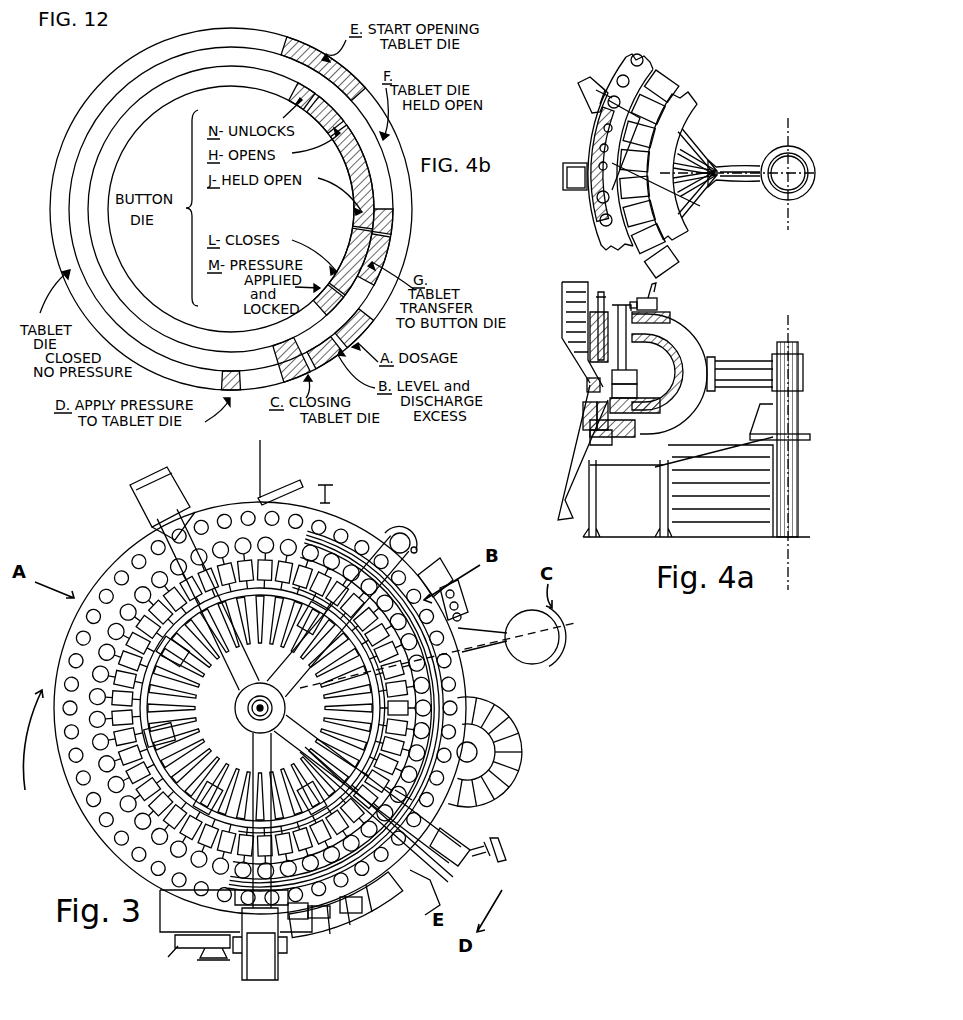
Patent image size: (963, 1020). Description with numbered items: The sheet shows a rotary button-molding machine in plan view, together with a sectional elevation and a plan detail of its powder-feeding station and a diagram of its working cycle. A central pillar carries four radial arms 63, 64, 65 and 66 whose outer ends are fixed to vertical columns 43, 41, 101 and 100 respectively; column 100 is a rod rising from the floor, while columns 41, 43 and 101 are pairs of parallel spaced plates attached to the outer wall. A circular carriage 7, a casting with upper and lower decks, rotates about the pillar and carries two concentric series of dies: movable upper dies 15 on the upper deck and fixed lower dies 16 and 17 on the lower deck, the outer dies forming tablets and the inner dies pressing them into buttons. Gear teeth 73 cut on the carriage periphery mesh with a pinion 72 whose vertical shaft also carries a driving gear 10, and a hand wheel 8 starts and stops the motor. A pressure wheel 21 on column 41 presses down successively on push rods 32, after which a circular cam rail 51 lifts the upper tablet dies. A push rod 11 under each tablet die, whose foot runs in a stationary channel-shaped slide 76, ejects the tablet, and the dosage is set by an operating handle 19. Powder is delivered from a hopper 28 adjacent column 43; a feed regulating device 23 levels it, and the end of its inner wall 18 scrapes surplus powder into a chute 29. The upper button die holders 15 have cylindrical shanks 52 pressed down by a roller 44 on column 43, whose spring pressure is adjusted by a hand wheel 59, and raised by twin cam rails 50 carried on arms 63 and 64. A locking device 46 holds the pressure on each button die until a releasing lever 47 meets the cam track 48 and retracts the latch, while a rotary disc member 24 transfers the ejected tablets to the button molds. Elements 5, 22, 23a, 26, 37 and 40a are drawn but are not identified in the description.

In FIG. 3, the machine 5 is at (414, 545).
In FIG. 4A, the carriage 7 is at (626, 440).
In FIG. 3, the hand wheel 8 is at (293, 480).
In FIG. 3, the driving gear 10 is at (360, 900).
In FIG. 4A, the push rod 11 is at (584, 410).
In FIG. 4A, the upper button-forming die holder 15 is at (630, 378).
In FIG. 4B, the lower die 16 is at (605, 212).
In FIG. 4A, the lower die 16 is at (634, 394).
In FIG. 4B, the lower die 17 is at (600, 192).
In FIG. 4B, the inner wall 18 is at (603, 90).
In FIG. 3, the operating handle 19 is at (318, 916).
In FIG. 3, the pressure wheel 21 is at (305, 912).
In FIG. 3, the lever 22 is at (200, 962).
In FIG. 4B, the powder feed regulating device 23 is at (598, 128).
In FIG. 4A, the powder feed regulating device 23 is at (586, 382).
In FIG. 4B, the die arm 23a is at (695, 205).
In FIG. 3, the rotary disc member 24 is at (518, 775).
In FIG. 3, the support 26 is at (438, 570).
In FIG. 4B, the hopper 28 is at (570, 174).
In FIG. 4A, the hopper 28 is at (575, 318).
In FIG. 3, the hopper 28 is at (410, 878).
In FIG. 4B, the chute 29 is at (585, 95).
In FIG. 4A, the chute 29 is at (600, 478).
In FIG. 3, the chute 29 is at (348, 912).
In FIG. 4A, the push rod 32 is at (604, 295).
In FIG. 3, the valve 37 is at (325, 483).
In FIG. 3, the plate 40a is at (462, 594).
In FIG. 3, the column 41 is at (280, 962).
In FIG. 3, the column 43 is at (433, 845).
In FIG. 3, the pressure roller 44 is at (400, 795).
In FIG. 4A, the die locking device 46 is at (660, 298).
In FIG. 3, the die locking device 46 is at (140, 706).
In FIG. 4A, the releasing lever 47 is at (655, 288).
In FIG. 3, the releasing cam-track 48 is at (320, 608).
In FIG. 3, the cam rails 50 is at (372, 545).
In FIG. 3, the cam rail 51 is at (340, 540).
In FIG. 4A, the shank 52 is at (634, 330).
In FIG. 3, the hand wheel 59 is at (512, 848).
In FIG. 3, the radial arm 63 is at (330, 760).
In FIG. 3, the radial arm 64 is at (262, 762).
In FIG. 3, the radial arm 65 is at (233, 655).
In FIG. 3, the radial arm 66 is at (293, 670).
In FIG. 3, the pinion 72 is at (380, 890).
In FIG. 4A, the gear teeth 73 is at (590, 418).
In FIG. 4A, the slide 76 is at (600, 440).
In FIG. 3, the column 100 is at (402, 532).
In FIG. 3, the column 101 is at (150, 478).